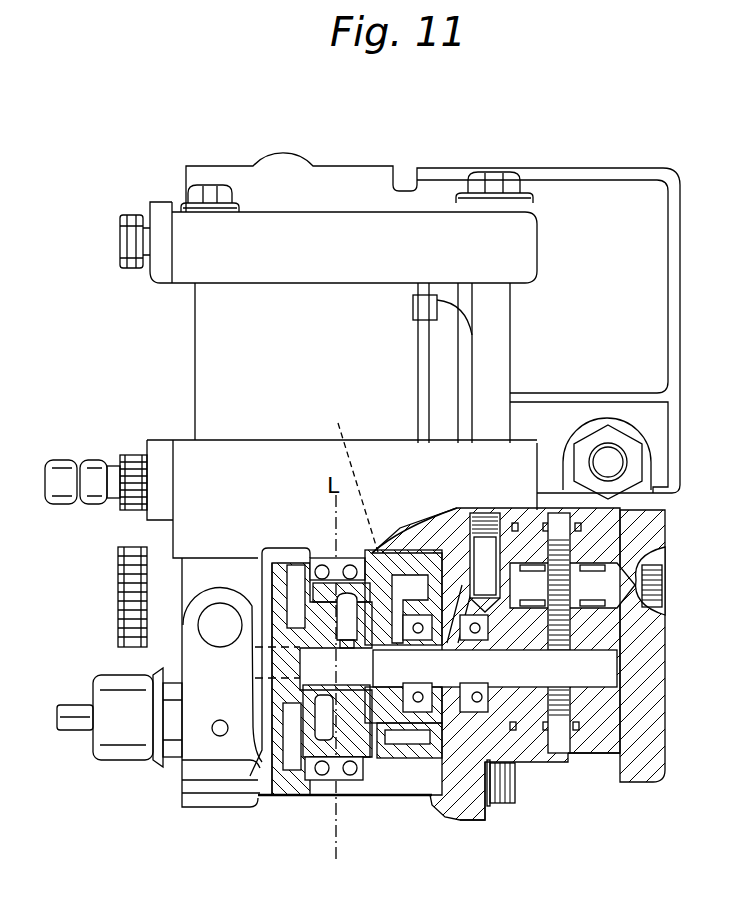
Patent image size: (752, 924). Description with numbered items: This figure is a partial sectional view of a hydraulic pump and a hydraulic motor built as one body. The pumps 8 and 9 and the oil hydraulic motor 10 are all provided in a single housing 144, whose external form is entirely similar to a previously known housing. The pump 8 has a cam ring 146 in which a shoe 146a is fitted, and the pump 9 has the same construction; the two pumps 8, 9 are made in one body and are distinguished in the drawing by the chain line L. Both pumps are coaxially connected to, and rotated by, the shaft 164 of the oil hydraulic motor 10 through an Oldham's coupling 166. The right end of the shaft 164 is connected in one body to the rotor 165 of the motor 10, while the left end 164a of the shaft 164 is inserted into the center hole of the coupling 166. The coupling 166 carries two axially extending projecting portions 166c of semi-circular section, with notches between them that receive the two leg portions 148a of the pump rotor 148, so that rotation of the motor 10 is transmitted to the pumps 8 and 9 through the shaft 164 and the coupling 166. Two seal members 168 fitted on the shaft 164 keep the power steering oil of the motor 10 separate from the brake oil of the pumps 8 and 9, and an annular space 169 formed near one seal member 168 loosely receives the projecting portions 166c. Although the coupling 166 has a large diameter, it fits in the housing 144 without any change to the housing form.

The pump 8 is at (303, 785).
The pump 9 is at (350, 788).
The oil hydraulic motor 10 is at (580, 790).
The housing 144 is at (391, 780).
The cam ring 146 is at (322, 558).
The shoe 146a is at (312, 562).
The rotor 148 is at (392, 775).
The leg portions 148a is at (349, 475).
The shaft 164 is at (503, 673).
The left end of the shaft 164a is at (455, 782).
The rotor 165 is at (593, 715).
The Oldham's coupling 166 is at (407, 780).
The projecting portions 166c is at (377, 550).
The seal members 168 is at (498, 512).
The annular space 169 is at (432, 598).